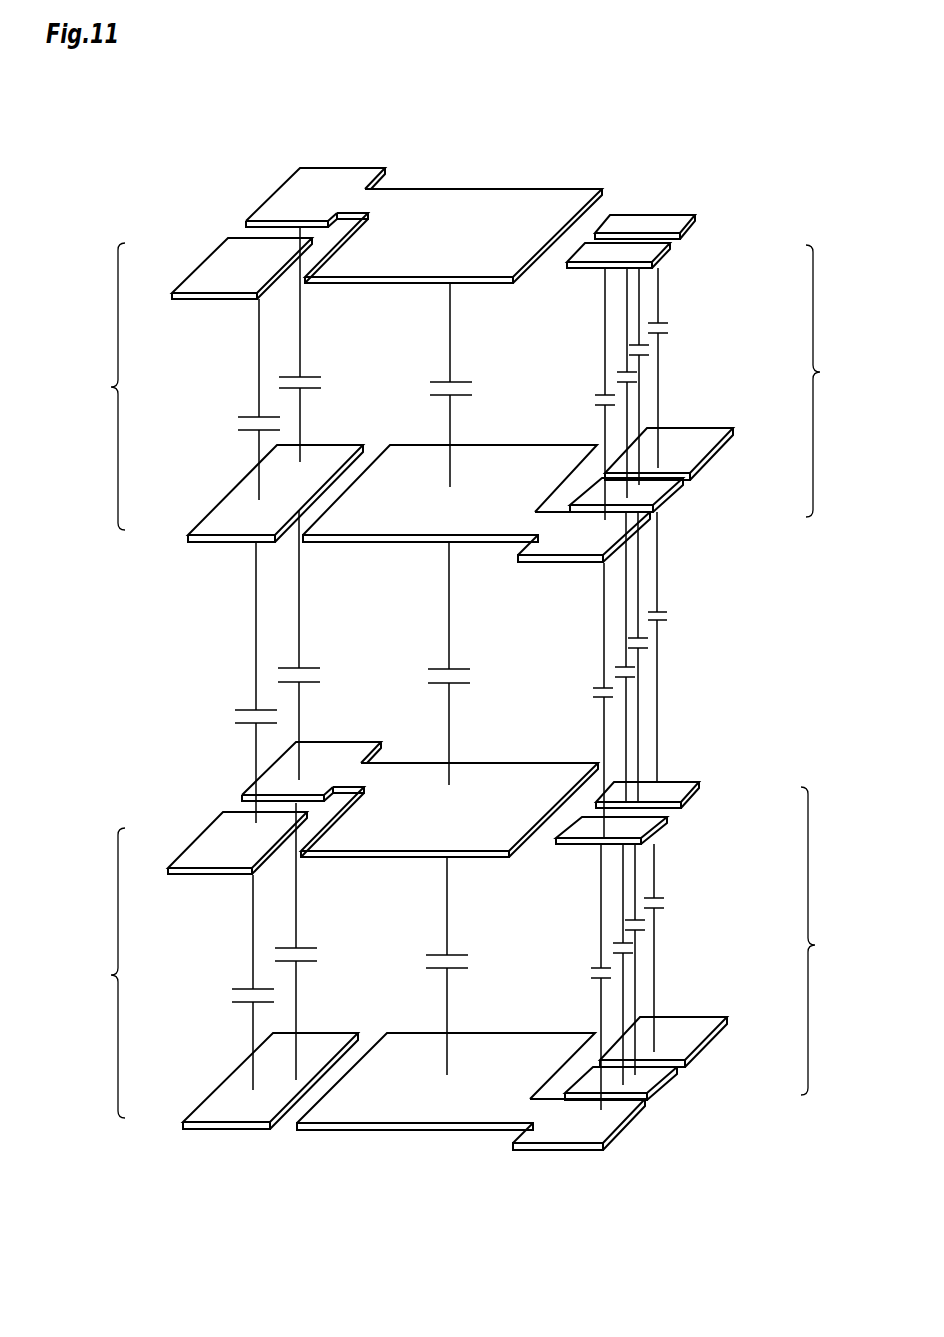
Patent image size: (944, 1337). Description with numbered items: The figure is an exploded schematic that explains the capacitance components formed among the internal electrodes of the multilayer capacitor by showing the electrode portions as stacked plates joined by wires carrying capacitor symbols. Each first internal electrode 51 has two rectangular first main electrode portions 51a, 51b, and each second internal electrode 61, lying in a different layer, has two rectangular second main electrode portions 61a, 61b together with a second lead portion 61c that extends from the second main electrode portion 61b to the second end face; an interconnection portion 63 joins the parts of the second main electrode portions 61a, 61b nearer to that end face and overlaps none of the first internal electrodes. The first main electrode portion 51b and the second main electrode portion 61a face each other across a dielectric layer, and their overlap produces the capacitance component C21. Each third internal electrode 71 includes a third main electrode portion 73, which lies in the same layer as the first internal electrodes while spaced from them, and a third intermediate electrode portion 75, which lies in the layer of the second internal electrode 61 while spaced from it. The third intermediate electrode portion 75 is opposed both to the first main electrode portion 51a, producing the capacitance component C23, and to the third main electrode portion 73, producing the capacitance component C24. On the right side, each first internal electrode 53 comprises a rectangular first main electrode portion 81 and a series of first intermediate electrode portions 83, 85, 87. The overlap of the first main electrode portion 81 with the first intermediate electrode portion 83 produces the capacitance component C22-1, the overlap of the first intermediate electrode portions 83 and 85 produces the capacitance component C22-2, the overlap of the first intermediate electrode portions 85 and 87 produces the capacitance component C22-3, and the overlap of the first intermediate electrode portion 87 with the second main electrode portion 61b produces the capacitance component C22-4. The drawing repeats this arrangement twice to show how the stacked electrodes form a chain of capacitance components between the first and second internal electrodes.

The first internal electrode 51 is at (413, 481).
The first main electrode portion 51a is at (283, 195).
The first main electrode portion 51b is at (485, 203).
The second internal electrode 61 is at (520, 782).
The second main electrode portion 61a is at (535, 472).
The second main electrode portion 61b is at (617, 522).
The second lead portion 61c is at (568, 543).
The interconnection portion 63 is at (537, 522).
The third internal electrode 71 is at (101, 680).
The third main electrode portion 73 is at (228, 272).
The third intermediate electrode portion 75 is at (257, 510).
The first internal electrode 53 is at (831, 670).
The first main electrode portion 81 is at (680, 450).
The first intermediate electrode portion 83 is at (663, 227).
The first intermediate electrode portion 85 is at (650, 495).
The first intermediate electrode portion 87 is at (645, 255).
The capacitance component C21 is at (457, 942).
The capacitance component C22-1 is at (676, 327).
The capacitance component C22-2 is at (660, 357).
The capacitance component C22-3 is at (648, 380).
The capacitance component C22-4 is at (622, 405).
The capacitance component C23 is at (307, 938).
The capacitance component C24 is at (238, 978).